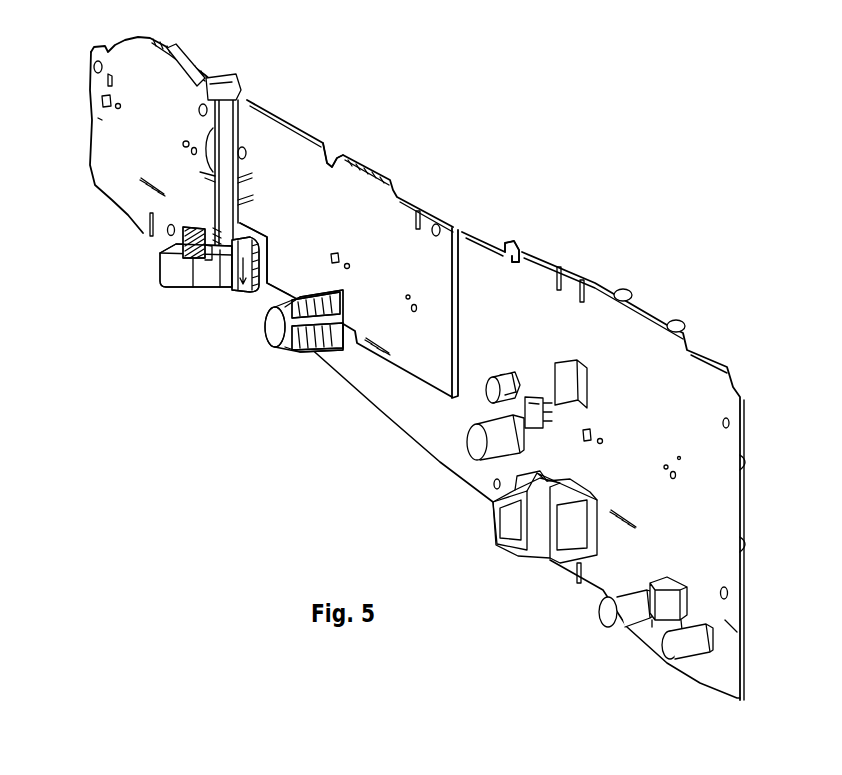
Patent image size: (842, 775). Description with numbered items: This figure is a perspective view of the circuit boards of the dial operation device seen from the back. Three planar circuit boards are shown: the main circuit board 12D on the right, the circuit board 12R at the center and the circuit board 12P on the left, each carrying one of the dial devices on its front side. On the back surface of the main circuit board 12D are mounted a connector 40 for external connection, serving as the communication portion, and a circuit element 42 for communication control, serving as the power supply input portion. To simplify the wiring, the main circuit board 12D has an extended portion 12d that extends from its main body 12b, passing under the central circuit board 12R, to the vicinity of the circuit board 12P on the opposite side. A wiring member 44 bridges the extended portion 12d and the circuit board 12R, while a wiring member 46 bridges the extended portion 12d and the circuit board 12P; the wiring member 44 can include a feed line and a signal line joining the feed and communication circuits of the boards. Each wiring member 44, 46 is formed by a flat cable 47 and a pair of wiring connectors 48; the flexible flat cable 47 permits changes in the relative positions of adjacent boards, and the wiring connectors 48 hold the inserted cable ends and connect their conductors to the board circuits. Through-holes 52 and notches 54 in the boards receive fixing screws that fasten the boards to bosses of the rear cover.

The circuit board 12P is at (110, 152).
The circuit board 12R is at (372, 158).
The main circuit board 12D is at (716, 348).
The extended portion 12d is at (260, 298).
The main body 12b is at (603, 590).
The connector 40 is at (497, 532).
The circuit element 42 is at (557, 388).
The wiring member 44 is at (303, 398).
The wiring member 46 is at (187, 346).
The flat cable 47 is at (172, 292).
The wiring connector 48 is at (238, 293).
The through-hole 52 is at (92, 62).
The notch 54 is at (333, 152).